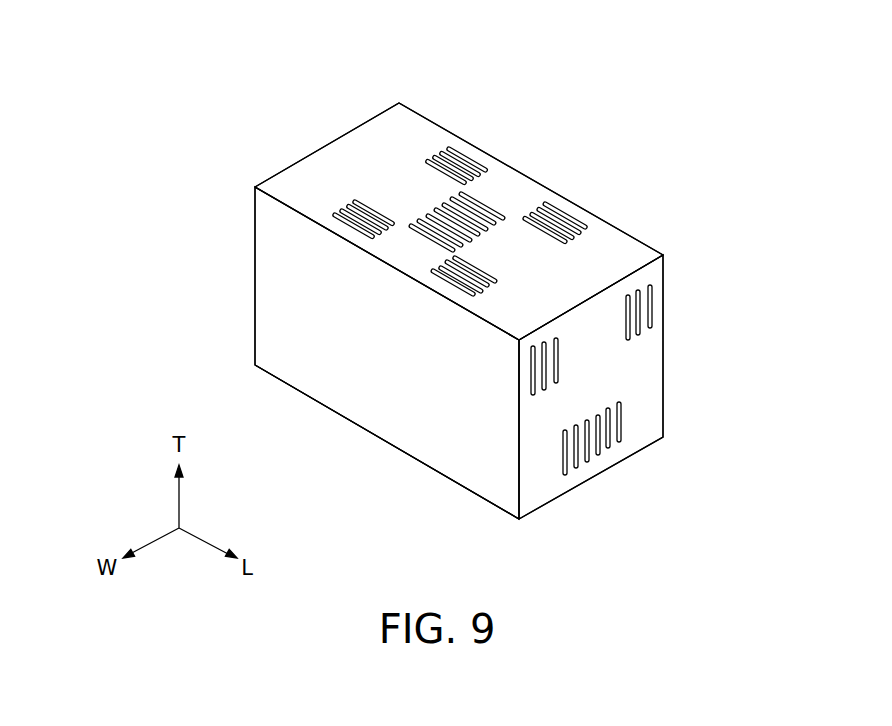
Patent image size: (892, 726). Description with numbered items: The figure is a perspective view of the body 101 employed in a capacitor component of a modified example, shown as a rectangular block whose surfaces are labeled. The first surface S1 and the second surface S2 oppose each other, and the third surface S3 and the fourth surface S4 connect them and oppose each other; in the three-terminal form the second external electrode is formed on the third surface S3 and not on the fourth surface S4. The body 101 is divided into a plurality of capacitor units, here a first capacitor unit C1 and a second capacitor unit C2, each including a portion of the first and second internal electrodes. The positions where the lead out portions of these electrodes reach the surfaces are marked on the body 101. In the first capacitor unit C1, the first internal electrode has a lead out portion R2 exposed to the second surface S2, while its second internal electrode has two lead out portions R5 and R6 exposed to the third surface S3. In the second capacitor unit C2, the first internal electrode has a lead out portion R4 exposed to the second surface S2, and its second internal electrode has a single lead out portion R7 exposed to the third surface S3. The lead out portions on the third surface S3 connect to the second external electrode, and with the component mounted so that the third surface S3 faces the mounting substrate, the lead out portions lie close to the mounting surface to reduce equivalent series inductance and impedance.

The body 101 is at (628, 245).
The first surface S1 is at (270, 226).
The second surface S2 is at (657, 352).
The third surface S3 is at (412, 120).
The fourth surface S4 is at (413, 457).
The lead out portion R2 is at (650, 293).
The lead out portion R4 is at (622, 422).
The lead out portion R5 is at (470, 154).
The lead out portion R6 is at (563, 208).
The lead out portion R7 is at (490, 206).
The first capacitor unit C1 is at (527, 244).
The second capacitor unit C2 is at (561, 277).